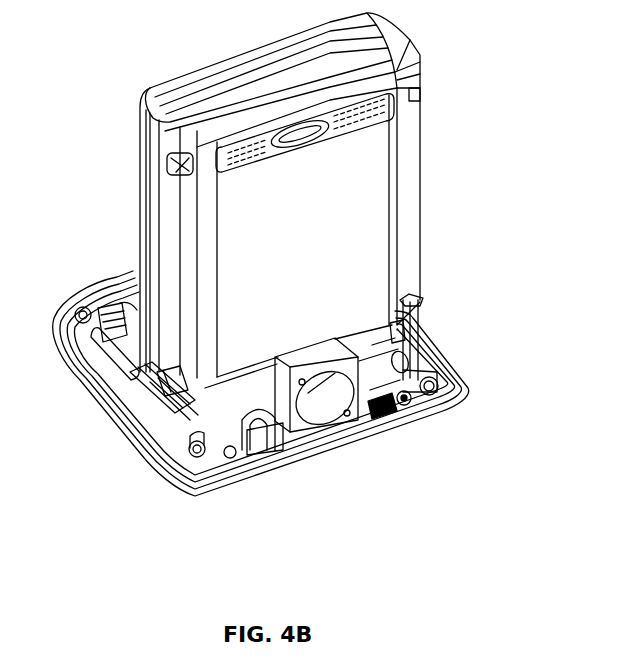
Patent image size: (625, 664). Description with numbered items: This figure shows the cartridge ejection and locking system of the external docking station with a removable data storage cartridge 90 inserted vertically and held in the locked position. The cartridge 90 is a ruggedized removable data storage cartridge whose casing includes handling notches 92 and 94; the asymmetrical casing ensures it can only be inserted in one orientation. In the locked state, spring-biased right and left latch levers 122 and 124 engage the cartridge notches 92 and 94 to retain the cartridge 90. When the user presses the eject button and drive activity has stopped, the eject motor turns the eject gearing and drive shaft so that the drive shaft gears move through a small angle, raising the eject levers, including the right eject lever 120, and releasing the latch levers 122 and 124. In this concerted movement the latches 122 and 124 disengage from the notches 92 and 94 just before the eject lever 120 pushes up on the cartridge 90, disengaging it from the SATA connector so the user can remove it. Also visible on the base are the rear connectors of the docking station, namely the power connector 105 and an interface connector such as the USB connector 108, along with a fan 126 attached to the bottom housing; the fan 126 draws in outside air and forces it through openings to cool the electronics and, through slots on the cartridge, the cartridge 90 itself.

The removable data storage cartridge 90 is at (413, 145).
The handling notch 92 is at (137, 387).
The handling notch 94 is at (410, 300).
The power connector 105 is at (263, 452).
The USB connector 108 is at (404, 432).
The right eject lever 120 is at (142, 398).
The right latch lever 122 is at (150, 423).
The left latch lever 124 is at (420, 308).
The fan 126 is at (323, 410).